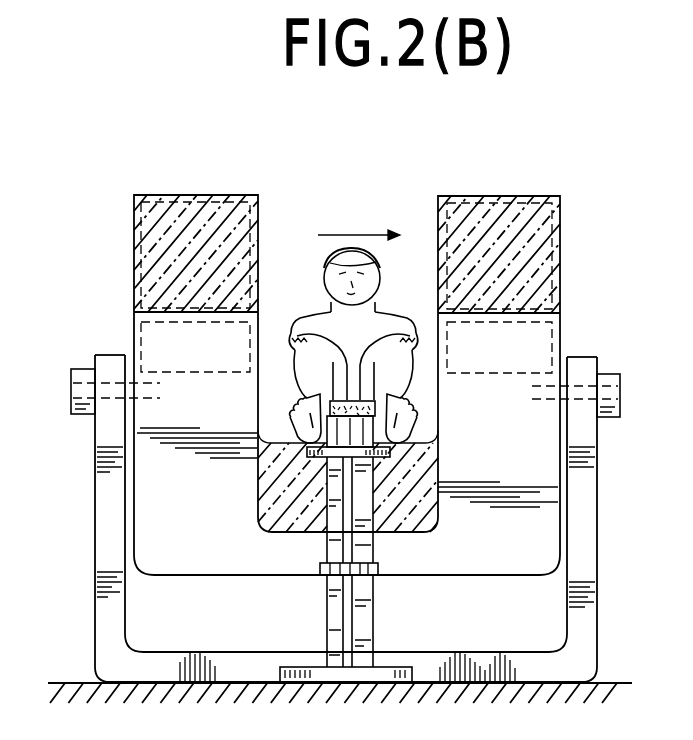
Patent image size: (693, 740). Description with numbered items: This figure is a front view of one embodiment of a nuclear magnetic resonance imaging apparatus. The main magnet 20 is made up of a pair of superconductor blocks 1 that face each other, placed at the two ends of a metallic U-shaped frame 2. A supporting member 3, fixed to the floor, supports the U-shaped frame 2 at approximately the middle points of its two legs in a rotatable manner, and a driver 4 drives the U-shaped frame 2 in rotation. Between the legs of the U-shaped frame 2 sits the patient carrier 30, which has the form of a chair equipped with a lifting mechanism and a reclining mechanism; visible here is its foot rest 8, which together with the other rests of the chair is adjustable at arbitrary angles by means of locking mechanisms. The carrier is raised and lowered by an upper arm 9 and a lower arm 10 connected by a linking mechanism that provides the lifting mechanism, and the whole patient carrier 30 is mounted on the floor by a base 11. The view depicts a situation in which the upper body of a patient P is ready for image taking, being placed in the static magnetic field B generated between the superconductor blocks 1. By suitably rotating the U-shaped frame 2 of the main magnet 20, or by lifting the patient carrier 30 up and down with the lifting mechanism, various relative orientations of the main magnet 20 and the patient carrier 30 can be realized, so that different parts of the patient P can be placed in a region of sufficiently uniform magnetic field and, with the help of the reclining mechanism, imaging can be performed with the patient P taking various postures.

The superconductor blocks 1 is at (142, 270).
The U-shaped frame 2 is at (134, 338).
The supporting member 3 is at (101, 545).
The driver 4 is at (71, 389).
The foot rest 8 is at (427, 456).
The upper arm 9 is at (362, 551).
The lower arm 10 is at (360, 623).
The base 11 is at (398, 667).
The main magnet 20 is at (567, 222).
The patient carrier 30 is at (311, 581).
The patient P is at (326, 283).
The static magnetic field B is at (359, 221).